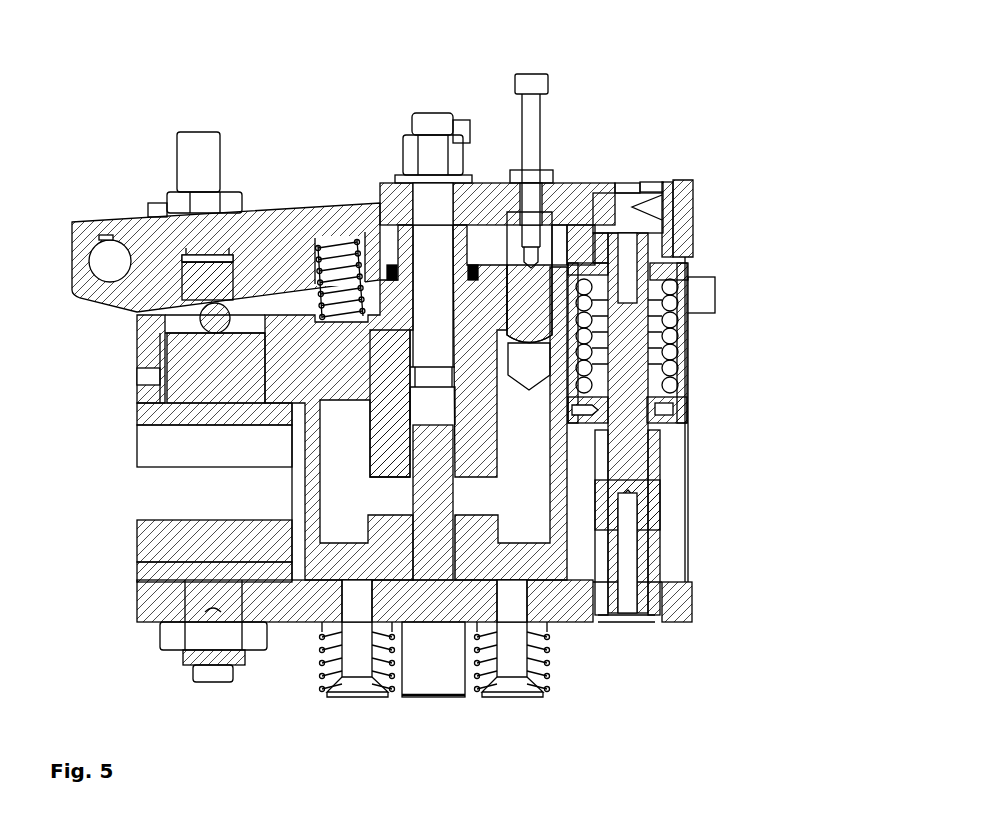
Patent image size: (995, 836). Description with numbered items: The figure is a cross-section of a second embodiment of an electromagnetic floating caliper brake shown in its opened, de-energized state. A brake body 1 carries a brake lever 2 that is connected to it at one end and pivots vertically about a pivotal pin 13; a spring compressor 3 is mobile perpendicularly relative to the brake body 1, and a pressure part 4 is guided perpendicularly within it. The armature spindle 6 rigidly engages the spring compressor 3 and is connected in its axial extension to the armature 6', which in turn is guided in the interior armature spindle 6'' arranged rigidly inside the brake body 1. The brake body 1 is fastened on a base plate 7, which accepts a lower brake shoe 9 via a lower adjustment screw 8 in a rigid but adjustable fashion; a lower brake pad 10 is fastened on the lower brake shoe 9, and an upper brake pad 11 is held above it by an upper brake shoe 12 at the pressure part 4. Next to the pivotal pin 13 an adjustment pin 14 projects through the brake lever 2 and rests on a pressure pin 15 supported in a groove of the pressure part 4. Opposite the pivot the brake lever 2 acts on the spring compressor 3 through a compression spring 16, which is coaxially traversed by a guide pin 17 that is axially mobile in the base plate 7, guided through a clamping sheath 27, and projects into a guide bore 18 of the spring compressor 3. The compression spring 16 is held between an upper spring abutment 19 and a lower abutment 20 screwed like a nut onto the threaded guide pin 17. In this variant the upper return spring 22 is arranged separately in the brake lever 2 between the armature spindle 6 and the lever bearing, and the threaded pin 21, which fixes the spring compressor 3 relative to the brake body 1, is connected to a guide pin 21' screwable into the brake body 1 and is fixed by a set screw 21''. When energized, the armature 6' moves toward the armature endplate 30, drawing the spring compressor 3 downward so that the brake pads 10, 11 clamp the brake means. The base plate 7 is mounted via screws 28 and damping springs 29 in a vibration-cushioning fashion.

The brake body 1 is at (282, 358).
The brake lever 2 is at (685, 222).
The spring compressor 3 is at (552, 233).
The pressure part 4 is at (183, 348).
The armature spindle 6 is at (409, 220).
The armature 6' is at (220, 406).
The armature spindle 6'' is at (241, 502).
The base plate 7 is at (680, 600).
The lower adjustment screw 8 is at (213, 665).
The lower brake shoe 9 is at (150, 567).
The lower brake pad 10 is at (150, 532).
The upper brake pad 11 is at (150, 452).
The upper brake shoe 12 is at (150, 411).
The pivotal pin 13 is at (100, 258).
The adjustment pin 14 is at (185, 148).
The pressure pin 15 is at (212, 318).
The compression spring 16 is at (678, 342).
The guide pin 17 is at (630, 460).
The guide bore 18 is at (686, 181).
The upper spring abutment 19 is at (675, 270).
The lower abutment 20 is at (680, 397).
The threaded pin 21 is at (507, 141).
The guide pin 21' is at (597, 202).
The set screw 21'' is at (570, 179).
The upper return spring 22 is at (338, 262).
The clamping sheath 27 is at (652, 556).
The screws 28 is at (348, 683).
The damping springs 29 is at (388, 685).
The armature endplate 30 is at (473, 515).